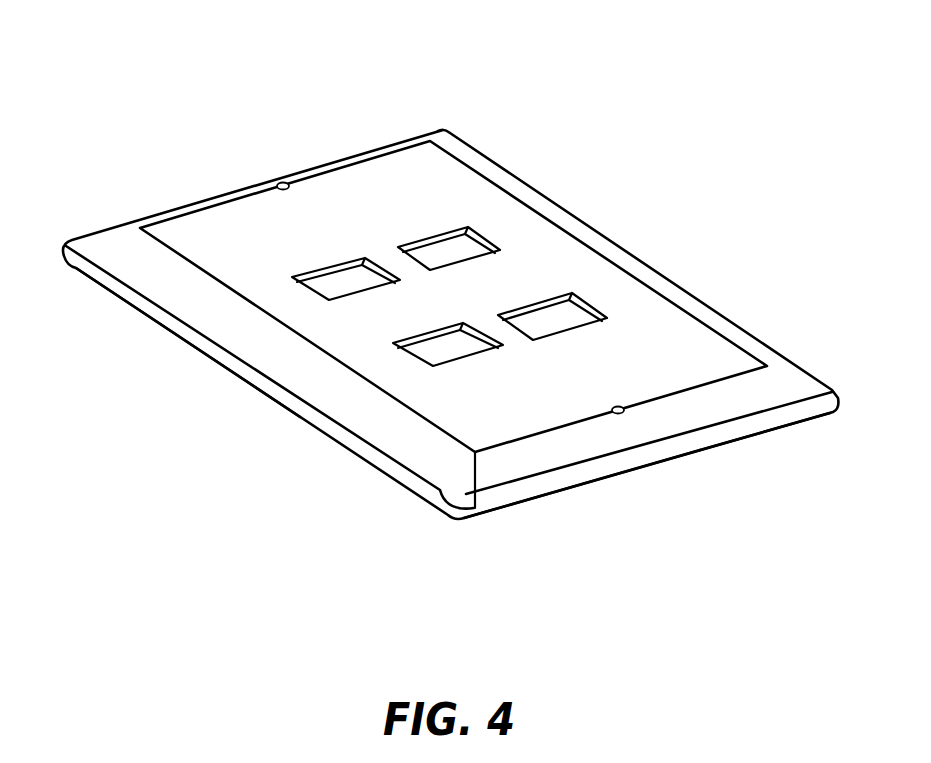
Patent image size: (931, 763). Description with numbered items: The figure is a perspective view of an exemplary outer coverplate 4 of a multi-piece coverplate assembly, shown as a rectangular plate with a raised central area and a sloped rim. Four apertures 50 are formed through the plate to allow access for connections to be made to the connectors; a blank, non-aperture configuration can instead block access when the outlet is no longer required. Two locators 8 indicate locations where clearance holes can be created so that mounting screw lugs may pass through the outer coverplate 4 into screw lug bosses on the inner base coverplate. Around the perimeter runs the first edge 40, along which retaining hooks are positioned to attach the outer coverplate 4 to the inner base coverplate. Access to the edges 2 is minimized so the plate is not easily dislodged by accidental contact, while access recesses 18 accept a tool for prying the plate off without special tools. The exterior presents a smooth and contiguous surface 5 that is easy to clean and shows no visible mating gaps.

The edges 2 is at (227, 370).
The outer coverplate 4 is at (495, 80).
The smooth and contiguous surface 5 is at (368, 185).
The locators 8 is at (282, 182).
The access recesses 18 is at (563, 488).
The first edge 40 is at (633, 472).
The apertures 50 is at (470, 246).